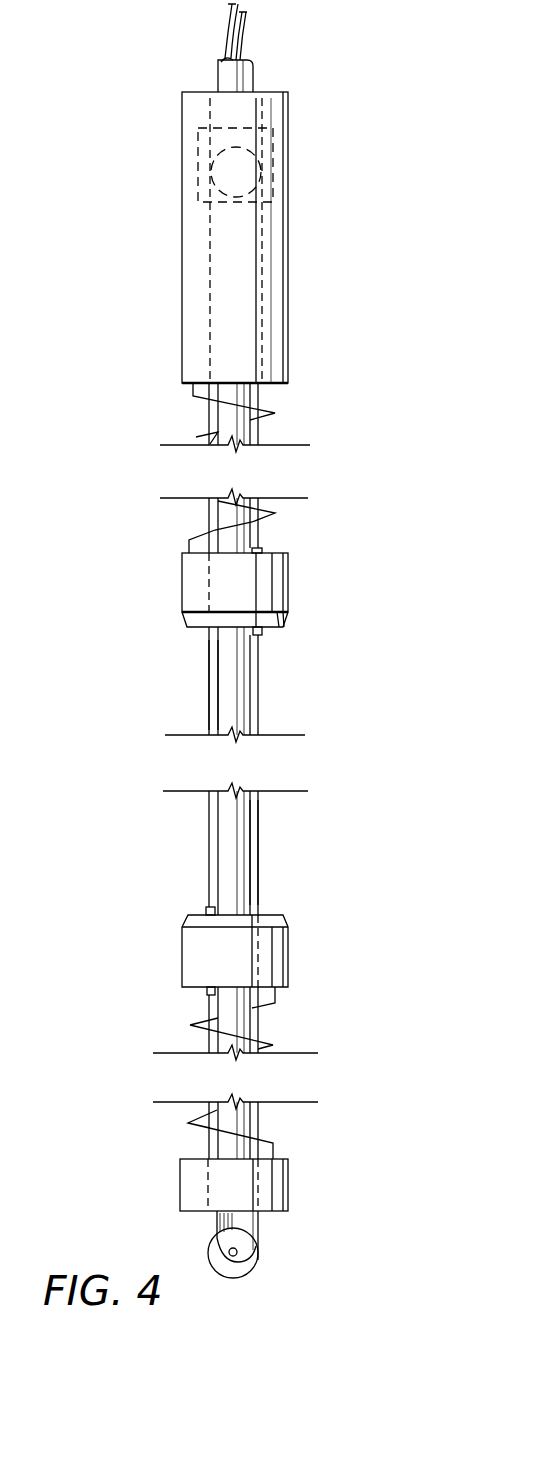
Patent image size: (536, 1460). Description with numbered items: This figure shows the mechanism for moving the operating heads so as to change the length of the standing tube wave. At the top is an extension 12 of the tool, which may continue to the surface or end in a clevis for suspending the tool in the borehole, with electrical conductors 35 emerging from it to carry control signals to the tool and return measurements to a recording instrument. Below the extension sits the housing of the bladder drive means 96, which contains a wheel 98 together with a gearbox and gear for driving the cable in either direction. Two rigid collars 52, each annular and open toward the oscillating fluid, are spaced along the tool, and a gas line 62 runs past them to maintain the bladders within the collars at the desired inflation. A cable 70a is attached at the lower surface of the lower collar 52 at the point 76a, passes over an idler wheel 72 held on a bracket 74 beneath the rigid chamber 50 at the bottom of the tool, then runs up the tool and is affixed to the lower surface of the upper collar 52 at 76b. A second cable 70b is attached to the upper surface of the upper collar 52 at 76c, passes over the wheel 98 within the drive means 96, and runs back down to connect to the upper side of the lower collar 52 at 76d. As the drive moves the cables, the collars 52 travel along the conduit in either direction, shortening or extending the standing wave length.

The extension 12 is at (253, 77).
The electrical conductors 35 is at (243, 27).
The rigid chamber 50 is at (288, 1180).
The rigid collar 52 is at (288, 598).
The gas line 62 is at (252, 420).
The cable 70a is at (258, 853).
The second cable 70b is at (208, 678).
The idler wheel 72 is at (245, 1268).
The bracket 74 is at (220, 1226).
The attachment point 76a is at (207, 992).
The attachment point 76b is at (262, 631).
The attachment point 76c is at (262, 551).
The attachment point 76d is at (206, 910).
The bladder drive means 96 is at (273, 132).
The wheel 98 is at (240, 172).